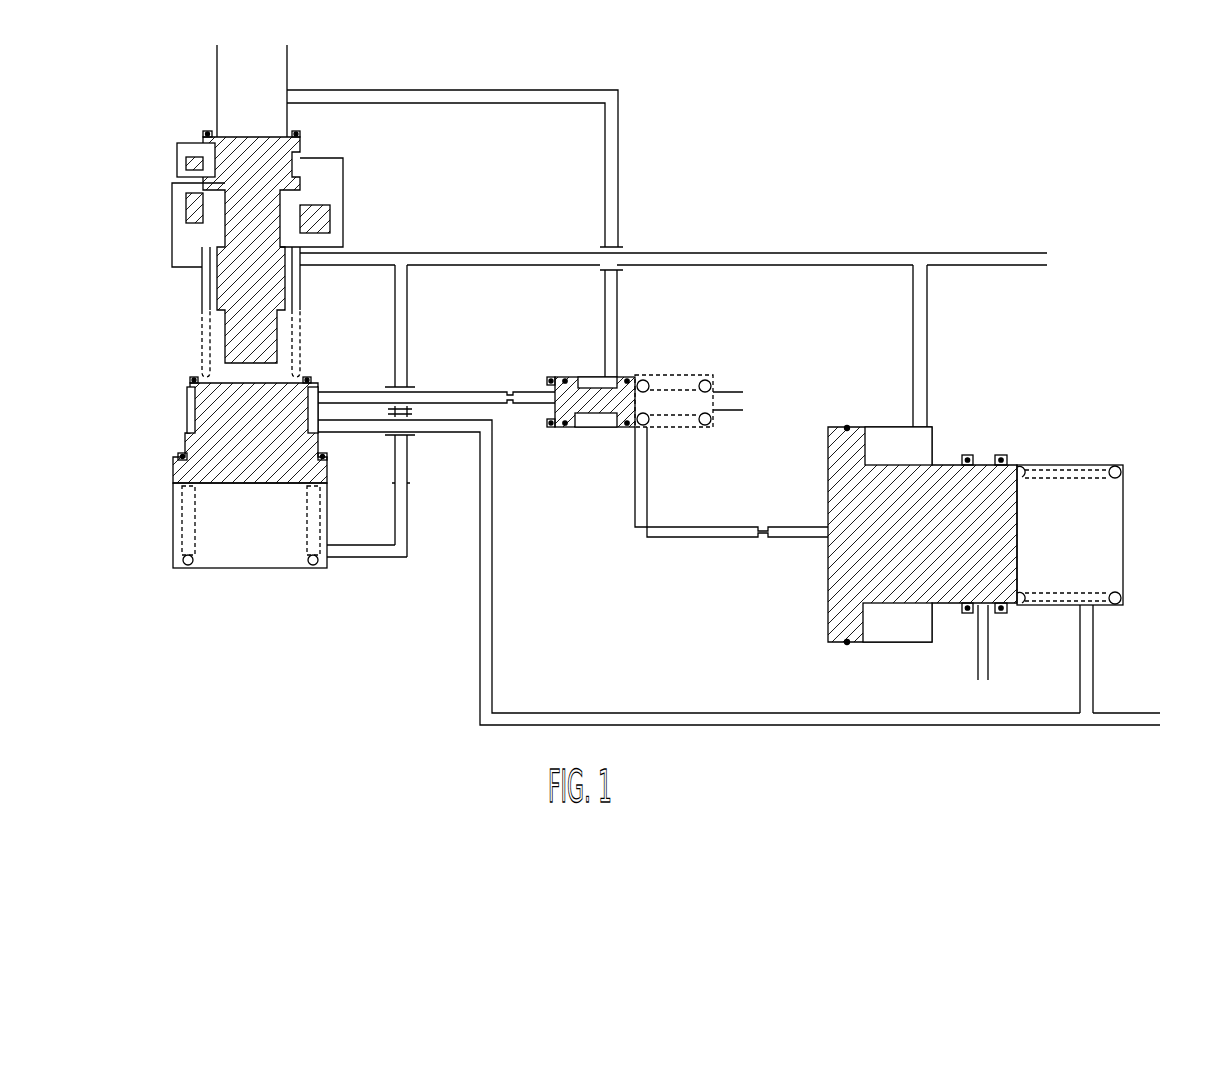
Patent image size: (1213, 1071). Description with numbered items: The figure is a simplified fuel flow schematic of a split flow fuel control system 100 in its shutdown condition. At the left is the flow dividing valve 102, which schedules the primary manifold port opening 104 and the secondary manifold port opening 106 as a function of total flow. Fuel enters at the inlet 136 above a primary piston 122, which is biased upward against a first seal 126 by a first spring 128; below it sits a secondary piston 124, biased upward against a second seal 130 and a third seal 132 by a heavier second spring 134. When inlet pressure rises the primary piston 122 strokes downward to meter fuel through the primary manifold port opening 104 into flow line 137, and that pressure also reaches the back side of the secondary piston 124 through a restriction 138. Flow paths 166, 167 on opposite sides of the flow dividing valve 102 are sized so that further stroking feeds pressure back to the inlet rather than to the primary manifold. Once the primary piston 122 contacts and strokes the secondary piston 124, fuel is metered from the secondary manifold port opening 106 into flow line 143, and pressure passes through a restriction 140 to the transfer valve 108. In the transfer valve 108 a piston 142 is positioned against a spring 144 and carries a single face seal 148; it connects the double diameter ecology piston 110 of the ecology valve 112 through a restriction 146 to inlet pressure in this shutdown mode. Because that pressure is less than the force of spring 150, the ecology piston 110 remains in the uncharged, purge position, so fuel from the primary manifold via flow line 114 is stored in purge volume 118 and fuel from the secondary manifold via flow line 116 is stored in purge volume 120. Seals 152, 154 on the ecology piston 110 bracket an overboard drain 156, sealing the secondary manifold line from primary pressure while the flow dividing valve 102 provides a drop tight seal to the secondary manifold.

The split flow fuel control system 100 is at (945, 85).
The flow dividing valve 102 is at (170, 318).
The primary manifold port opening 104 is at (303, 267).
The secondary manifold port opening 106 is at (318, 432).
The transfer valve 108 is at (662, 360).
The double diameter ecology piston 110 is at (850, 578).
The ecology valve 112 is at (1042, 422).
The flow line 114 is at (928, 374).
The flow line 116 is at (1093, 668).
The purge volume 118 is at (887, 425).
The purge volume 120 is at (1123, 498).
The primary piston 122 is at (230, 155).
The secondary piston 124 is at (197, 450).
The first seal 126 is at (303, 133).
The first spring 128 is at (210, 378).
The second seal 130 is at (310, 378).
The third seal 132 is at (327, 458).
The second spring 134 is at (187, 565).
The inlet 136 is at (283, 73).
The flow line 137 is at (720, 253).
The restriction 138 is at (413, 490).
The restriction 140 is at (513, 377).
The piston 142 is at (565, 404).
The flow line 143 is at (617, 713).
The spring 144 is at (703, 426).
The restriction 146 is at (762, 548).
The single face seal 148 is at (565, 377).
The spring 150 is at (1107, 464).
The seal 152 is at (967, 455).
The seal 154 is at (998, 455).
The overboard drain 156 is at (988, 648).
The flow path 166 is at (177, 160).
The flow path 167 is at (344, 198).